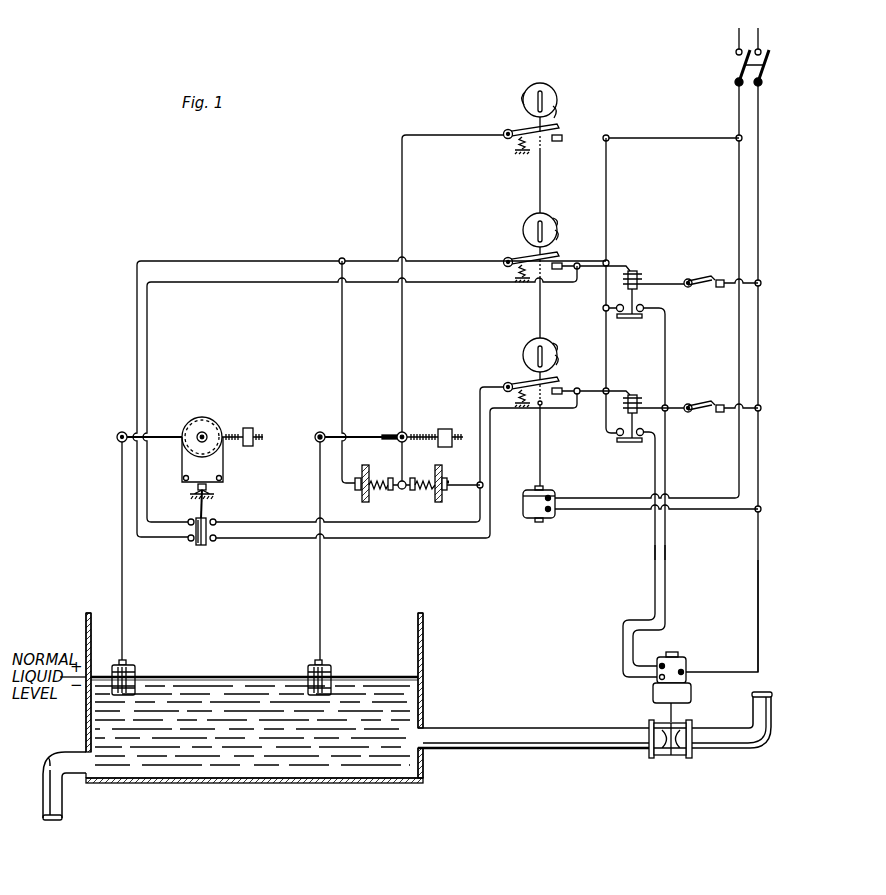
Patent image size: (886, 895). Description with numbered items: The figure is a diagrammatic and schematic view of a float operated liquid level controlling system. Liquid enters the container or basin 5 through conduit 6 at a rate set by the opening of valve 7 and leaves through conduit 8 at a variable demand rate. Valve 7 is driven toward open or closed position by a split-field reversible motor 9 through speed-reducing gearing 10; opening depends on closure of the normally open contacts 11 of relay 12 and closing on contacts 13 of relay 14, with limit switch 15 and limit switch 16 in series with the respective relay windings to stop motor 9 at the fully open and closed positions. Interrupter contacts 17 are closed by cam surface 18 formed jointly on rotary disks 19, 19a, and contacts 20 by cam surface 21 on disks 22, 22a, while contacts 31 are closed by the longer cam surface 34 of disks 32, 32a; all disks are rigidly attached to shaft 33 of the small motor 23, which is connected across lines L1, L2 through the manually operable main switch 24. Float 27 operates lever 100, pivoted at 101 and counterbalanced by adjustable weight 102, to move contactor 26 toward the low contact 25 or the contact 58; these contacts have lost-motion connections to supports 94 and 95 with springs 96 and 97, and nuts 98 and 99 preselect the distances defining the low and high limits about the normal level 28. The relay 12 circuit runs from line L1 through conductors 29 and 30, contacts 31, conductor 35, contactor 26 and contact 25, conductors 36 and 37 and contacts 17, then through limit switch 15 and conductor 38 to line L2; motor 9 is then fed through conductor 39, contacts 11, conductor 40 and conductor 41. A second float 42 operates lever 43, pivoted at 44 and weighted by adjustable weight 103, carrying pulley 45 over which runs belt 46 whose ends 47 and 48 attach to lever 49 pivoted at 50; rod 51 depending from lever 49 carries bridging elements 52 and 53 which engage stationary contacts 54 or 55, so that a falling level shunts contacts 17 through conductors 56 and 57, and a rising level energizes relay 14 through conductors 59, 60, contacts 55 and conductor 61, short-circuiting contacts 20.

The container or basin 5 is at (424, 655).
The conduit 6 is at (535, 750).
The valve 7 is at (675, 760).
The conduit 8 is at (63, 806).
The split-field reversible motor 9 is at (681, 654).
The speed-reducing gearing 10 is at (652, 694).
The normally open contacts 11 is at (617, 443).
The electromagnetically operable relay 12 is at (637, 396).
The normally open contacts 13 is at (643, 319).
The electromagnetically operable relay 14 is at (633, 270).
The limit switch 15 is at (707, 415).
The limit switch 16 is at (707, 290).
The normally open contacts 17 is at (566, 385).
The cam surface 18 is at (561, 359).
The rotary disk 19 is at (522, 357).
The rotary disk 19a is at (554, 345).
The normally open contacts 20 is at (564, 263).
The cam surface 21 is at (561, 236).
The rotary disk 22 is at (522, 233).
The rotary disk 22a is at (555, 222).
The motor 23 is at (539, 523).
The main switch 24 is at (738, 66).
The low contact 25 is at (413, 492).
The contactor 26 is at (401, 489).
The float 27 is at (334, 670).
The normal level 28 is at (237, 676).
The conductor 29 is at (737, 104).
The conductor 30 is at (666, 138).
The contacts 31 is at (563, 130).
The disk 32 is at (560, 113).
The disk 32a is at (522, 100).
The shaft 33 is at (538, 448).
The cam surface 34 is at (551, 89).
The conductor 35 is at (446, 135).
The conductor 36 is at (470, 489).
The conductor 37 is at (480, 386).
The conductor 38 is at (759, 340).
The conductor 39 is at (607, 178).
The conductor 40 is at (654, 549).
The conductor 41 is at (757, 582).
The second float 42 is at (136, 668).
The lever 43 is at (160, 436).
The pivot 44 is at (203, 430).
The pulley or wheel 45 is at (212, 425).
The belt or strap 46 is at (182, 461).
The end of belt 47 is at (222, 479).
The end of belt 48 is at (184, 479).
The lever 49 is at (201, 475).
The pivot 50 is at (197, 489).
The lever or rod 51 is at (206, 512).
The bridging contact element 52 is at (204, 546).
The bridging contact element 53 is at (198, 545).
The stationary contacts 54 is at (216, 524).
The stationary contacts 55 is at (188, 524).
The conductor 56 is at (287, 522).
The conductor 57 is at (378, 538).
The contact 58 is at (390, 492).
The conductor 59 is at (341, 352).
The conductor 60 is at (283, 261).
The conductor 61 is at (148, 332).
The support 94 is at (440, 472).
The support 95 is at (359, 470).
The spring 96 is at (424, 478).
The spring 97 is at (378, 478).
The nut 98 is at (450, 484).
The nut 99 is at (360, 494).
The lever 100 is at (368, 436).
The pivot 101 is at (400, 432).
The adjustable weight 102 is at (445, 428).
The adjustable weight 103 is at (250, 428).
The line L1 is at (738, 28).
The line L2 is at (758, 28).